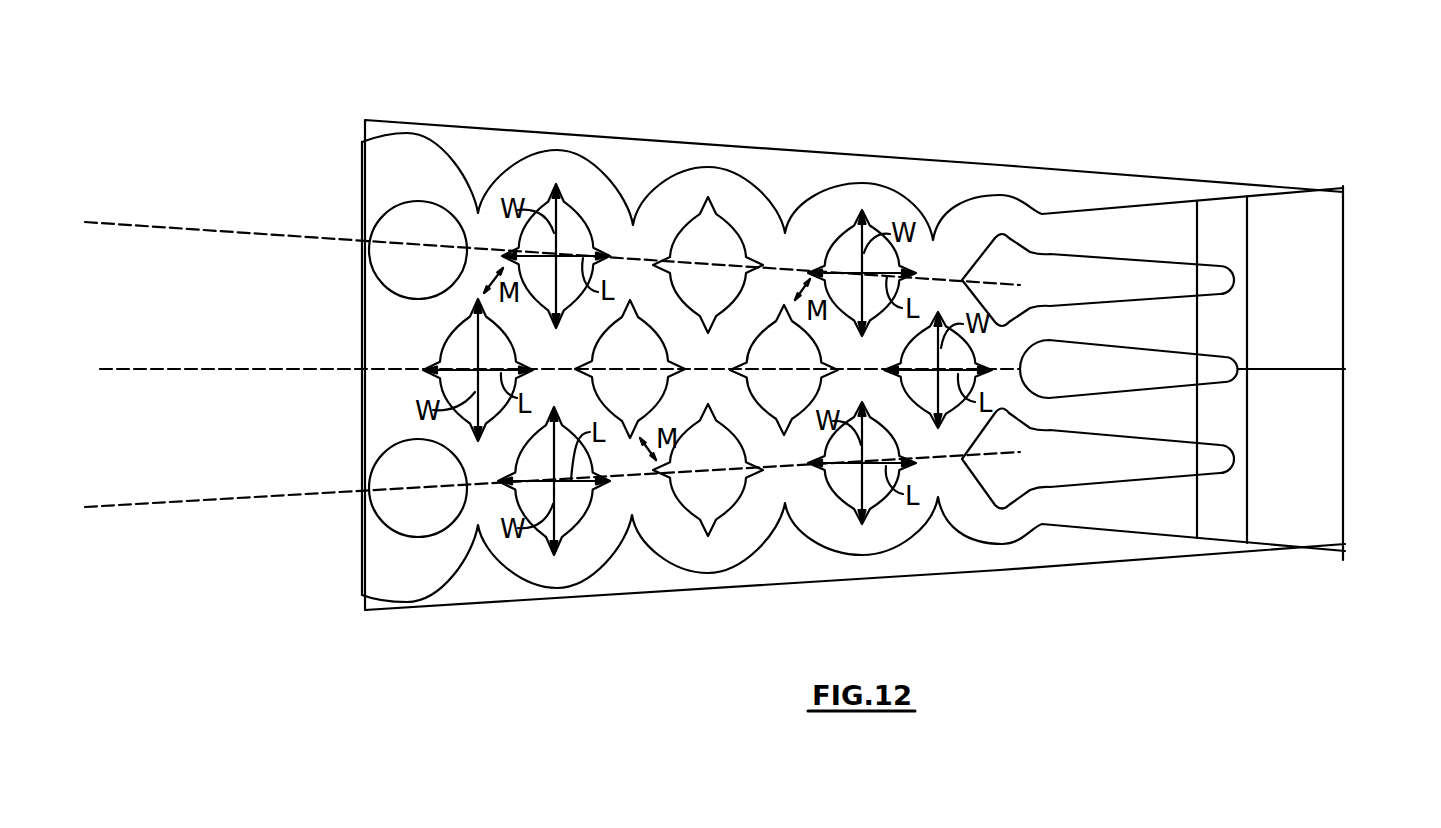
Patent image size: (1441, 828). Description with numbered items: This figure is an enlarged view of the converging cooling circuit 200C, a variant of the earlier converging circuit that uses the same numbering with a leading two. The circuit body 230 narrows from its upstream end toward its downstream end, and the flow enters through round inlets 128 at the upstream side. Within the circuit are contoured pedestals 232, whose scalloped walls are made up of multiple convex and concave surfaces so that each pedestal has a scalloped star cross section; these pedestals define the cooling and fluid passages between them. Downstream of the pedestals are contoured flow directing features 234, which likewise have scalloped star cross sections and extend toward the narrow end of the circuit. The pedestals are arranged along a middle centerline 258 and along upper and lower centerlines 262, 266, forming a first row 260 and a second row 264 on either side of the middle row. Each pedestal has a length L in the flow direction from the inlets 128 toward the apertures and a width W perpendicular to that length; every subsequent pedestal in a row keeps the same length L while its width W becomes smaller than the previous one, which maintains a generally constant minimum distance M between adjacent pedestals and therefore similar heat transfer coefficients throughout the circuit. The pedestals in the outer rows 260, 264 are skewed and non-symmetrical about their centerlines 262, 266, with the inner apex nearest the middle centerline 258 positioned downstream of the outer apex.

The inlets 128 is at (402, 217).
The converging cooling circuit 200C is at (1078, 90).
The sheet body 230 is at (1334, 502).
The contoured pedestals 232 is at (620, 340).
The contoured flow directing features 234 is at (1063, 280).
The center axis 258 is at (180, 369).
The upper row of star-shaped openings 260 is at (843, 252).
The upper axis 262 is at (162, 227).
The lower row of star-shaped openings 264 is at (573, 498).
The lower axis 266 is at (185, 501).